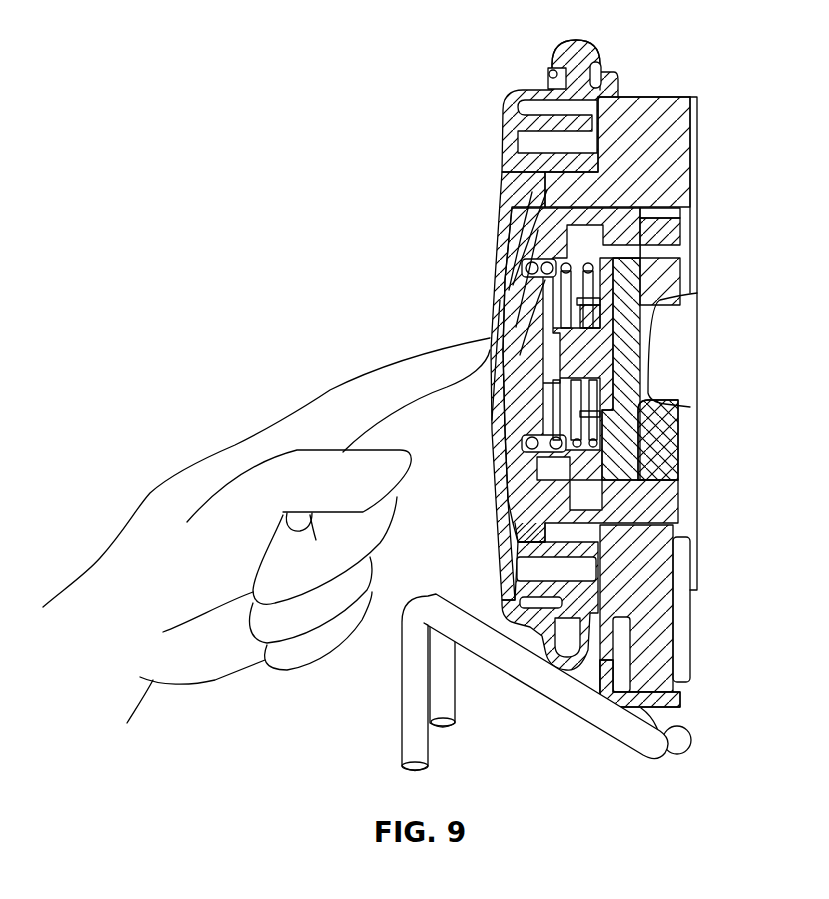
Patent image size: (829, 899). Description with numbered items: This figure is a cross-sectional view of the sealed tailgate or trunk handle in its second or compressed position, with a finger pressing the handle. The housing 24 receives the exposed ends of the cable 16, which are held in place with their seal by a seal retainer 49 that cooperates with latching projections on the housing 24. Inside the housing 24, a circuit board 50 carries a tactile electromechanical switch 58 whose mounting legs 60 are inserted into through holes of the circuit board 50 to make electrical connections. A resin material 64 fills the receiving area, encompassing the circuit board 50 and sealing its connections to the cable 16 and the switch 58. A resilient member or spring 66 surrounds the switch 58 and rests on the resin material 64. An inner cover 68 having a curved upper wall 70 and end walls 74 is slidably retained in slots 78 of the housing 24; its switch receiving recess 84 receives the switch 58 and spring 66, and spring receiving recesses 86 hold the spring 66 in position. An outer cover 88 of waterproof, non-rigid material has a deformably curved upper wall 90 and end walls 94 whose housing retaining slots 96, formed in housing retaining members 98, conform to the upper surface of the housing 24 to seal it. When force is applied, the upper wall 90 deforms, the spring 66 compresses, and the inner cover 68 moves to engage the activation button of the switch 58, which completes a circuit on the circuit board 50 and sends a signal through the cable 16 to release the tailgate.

The cable 16 is at (398, 678).
The housing 24 is at (700, 262).
The seal retainer 49 is at (663, 752).
The circuit board 50 is at (623, 360).
The tactile electromechanical switch 58 is at (597, 322).
The mounting legs 60 is at (520, 290).
The resin material 64 is at (655, 497).
The resilient member or spring 66 is at (537, 267).
The inner cover 68 is at (517, 327).
The upper wall 70 is at (490, 338).
The end walls 74 is at (584, 238).
The slots 78 is at (513, 227).
The switch receiving recess 84 is at (697, 205).
The spring receiving recesses 86 is at (500, 490).
The outer cover 88 is at (508, 92).
The upper wall 90 is at (500, 135).
The end walls 94 is at (535, 627).
The housing retaining slots 96 is at (592, 70).
The housing retaining members 98 is at (568, 45).